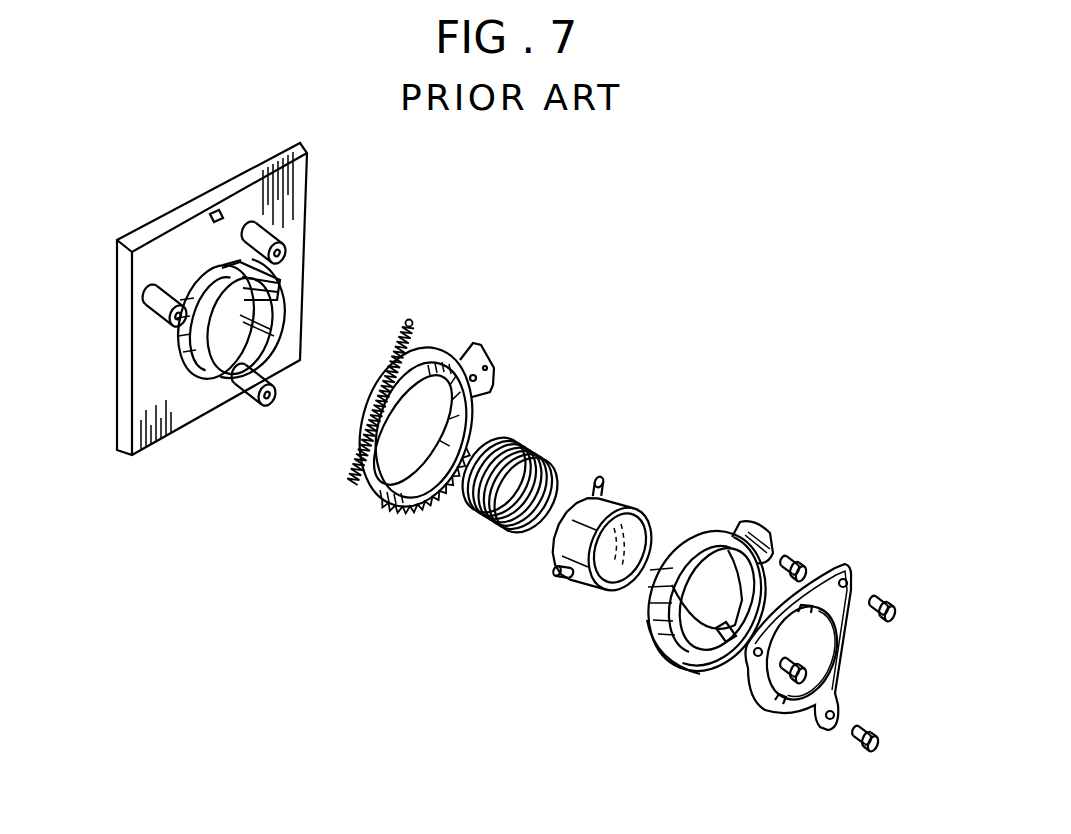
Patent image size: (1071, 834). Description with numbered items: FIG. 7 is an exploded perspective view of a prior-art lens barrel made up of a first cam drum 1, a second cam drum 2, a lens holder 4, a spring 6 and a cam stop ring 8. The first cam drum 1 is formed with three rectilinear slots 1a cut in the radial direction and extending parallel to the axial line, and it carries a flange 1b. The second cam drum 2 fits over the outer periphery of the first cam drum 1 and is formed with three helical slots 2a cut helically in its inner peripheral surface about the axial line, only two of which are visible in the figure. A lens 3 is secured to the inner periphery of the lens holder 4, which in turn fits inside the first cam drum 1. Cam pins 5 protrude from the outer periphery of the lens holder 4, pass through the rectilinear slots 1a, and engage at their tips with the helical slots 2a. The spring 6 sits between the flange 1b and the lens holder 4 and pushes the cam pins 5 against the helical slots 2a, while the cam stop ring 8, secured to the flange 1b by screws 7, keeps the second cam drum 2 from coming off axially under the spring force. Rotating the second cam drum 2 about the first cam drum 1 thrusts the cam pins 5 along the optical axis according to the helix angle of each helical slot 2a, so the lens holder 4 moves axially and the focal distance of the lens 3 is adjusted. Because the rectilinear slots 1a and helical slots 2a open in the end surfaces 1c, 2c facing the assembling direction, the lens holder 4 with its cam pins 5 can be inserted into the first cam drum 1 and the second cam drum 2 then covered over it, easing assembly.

The first cam drum 1 is at (190, 347).
The rectilinear slots 1a is at (218, 272).
The flange 1b is at (142, 368).
The end surface 1c is at (281, 298).
The second cam drum 2 is at (648, 628).
The helical slots 2a is at (728, 540).
The end surface 2c is at (650, 609).
The lens 3 is at (644, 513).
The lens holder 4 is at (613, 500).
The cam pins 5 is at (596, 478).
The spring 6 is at (487, 523).
The screws 7 is at (891, 594).
The cam stop ring 8 is at (846, 641).